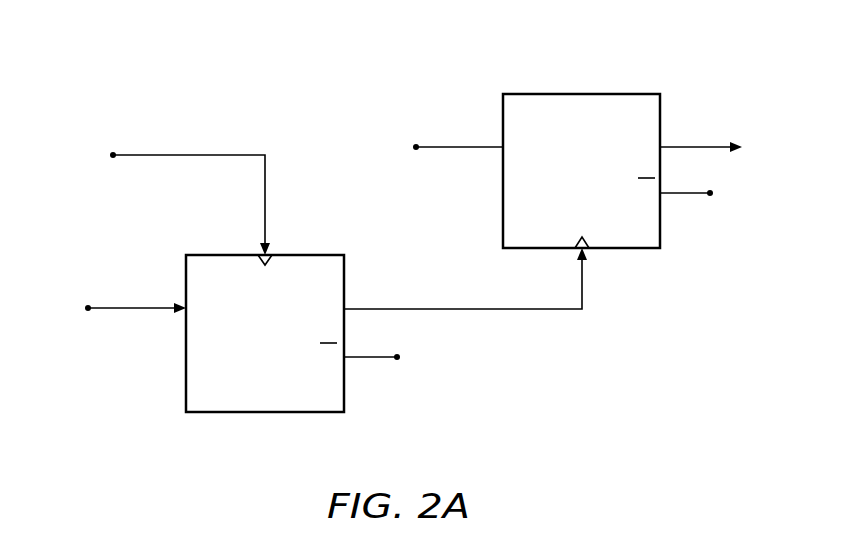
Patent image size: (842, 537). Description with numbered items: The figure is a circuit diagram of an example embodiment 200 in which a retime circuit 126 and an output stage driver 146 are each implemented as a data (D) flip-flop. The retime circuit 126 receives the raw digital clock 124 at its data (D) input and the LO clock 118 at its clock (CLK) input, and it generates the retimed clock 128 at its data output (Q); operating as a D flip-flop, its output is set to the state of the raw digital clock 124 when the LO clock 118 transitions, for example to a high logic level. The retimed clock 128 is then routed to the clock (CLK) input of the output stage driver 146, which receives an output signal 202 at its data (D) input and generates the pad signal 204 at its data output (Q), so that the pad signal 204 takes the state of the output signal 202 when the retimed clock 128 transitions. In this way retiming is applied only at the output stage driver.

The example embodiment 200 is at (117, 49).
The LO clock 118 is at (147, 156).
The raw digital clock 124 is at (126, 306).
The retime circuit 126 is at (283, 393).
The retimed clock 128 is at (456, 311).
The output stage driver 146 is at (600, 128).
The output signal 202 is at (442, 149).
The pad signal 204 is at (705, 150).